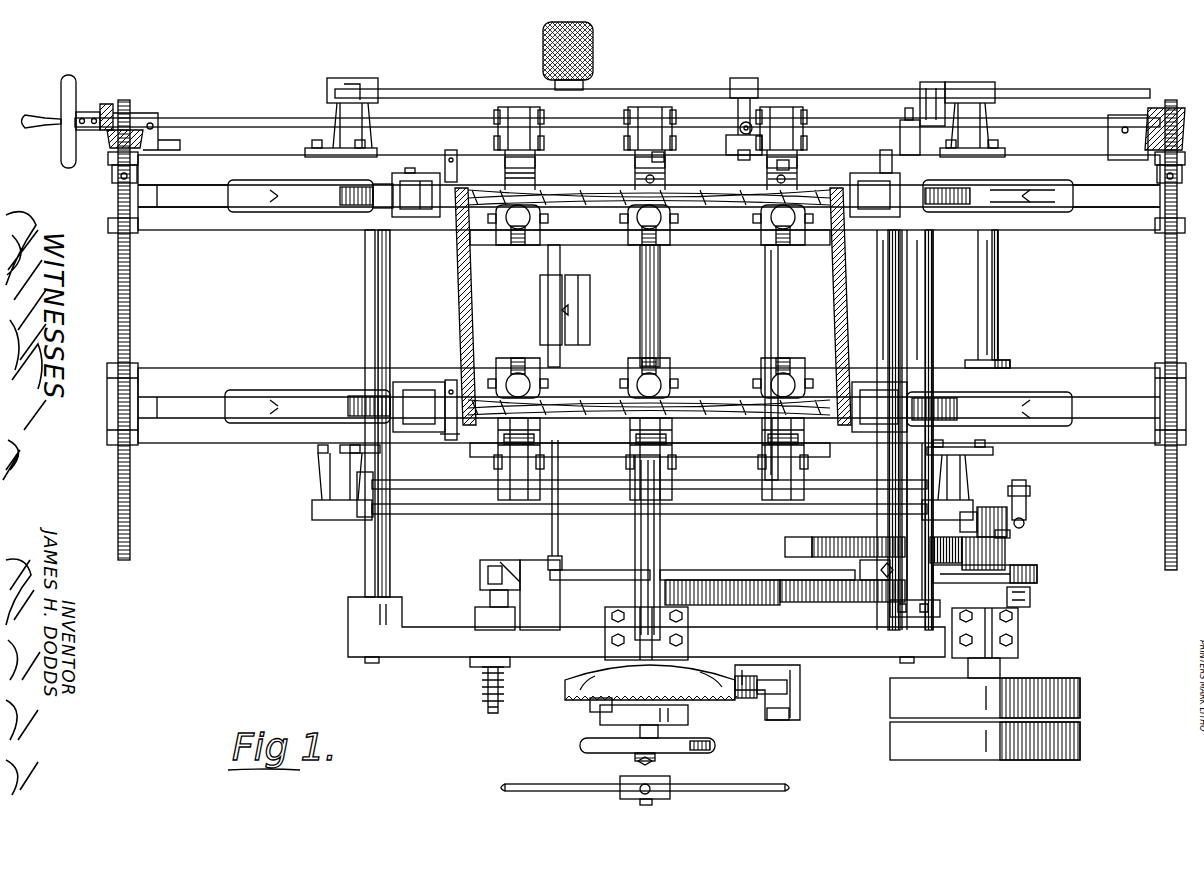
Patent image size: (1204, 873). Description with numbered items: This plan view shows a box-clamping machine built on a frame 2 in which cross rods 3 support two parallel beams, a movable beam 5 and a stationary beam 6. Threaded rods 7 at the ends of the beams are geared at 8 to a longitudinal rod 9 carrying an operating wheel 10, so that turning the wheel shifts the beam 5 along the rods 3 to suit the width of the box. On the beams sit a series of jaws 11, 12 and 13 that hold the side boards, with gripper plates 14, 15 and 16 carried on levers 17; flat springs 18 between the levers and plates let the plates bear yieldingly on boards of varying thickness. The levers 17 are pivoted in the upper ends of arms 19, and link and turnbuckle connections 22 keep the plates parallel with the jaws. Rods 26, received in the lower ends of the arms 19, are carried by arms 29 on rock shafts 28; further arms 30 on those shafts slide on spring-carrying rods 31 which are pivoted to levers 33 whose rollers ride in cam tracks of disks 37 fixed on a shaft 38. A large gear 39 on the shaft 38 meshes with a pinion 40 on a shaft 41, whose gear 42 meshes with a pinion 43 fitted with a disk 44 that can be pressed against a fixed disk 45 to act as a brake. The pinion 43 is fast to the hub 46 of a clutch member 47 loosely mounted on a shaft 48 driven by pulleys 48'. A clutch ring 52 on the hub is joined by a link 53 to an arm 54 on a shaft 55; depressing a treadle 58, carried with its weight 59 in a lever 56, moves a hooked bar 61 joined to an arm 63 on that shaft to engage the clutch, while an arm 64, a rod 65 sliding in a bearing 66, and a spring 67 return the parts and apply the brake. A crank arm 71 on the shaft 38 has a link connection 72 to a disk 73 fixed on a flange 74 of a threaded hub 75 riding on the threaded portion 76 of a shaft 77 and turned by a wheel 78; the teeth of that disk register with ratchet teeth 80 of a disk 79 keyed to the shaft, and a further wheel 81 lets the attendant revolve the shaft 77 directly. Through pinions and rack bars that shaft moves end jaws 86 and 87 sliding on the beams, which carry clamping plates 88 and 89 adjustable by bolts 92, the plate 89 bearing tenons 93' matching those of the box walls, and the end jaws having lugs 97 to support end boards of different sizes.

The frame 2 is at (348, 652).
The cross rods 3 is at (362, 552).
The movable beam 5 is at (248, 443).
The stationary beam 6 is at (291, 230).
The threaded rods 7 is at (130, 322).
The gear connection 8 is at (108, 138).
The longitudinal rod 9 is at (225, 122).
The operating wheel 10 is at (62, 92).
The jaw 11 is at (760, 230).
The jaw 12 is at (650, 232).
The jaw 13 is at (512, 232).
The gripper plate 14 is at (785, 185).
The gripper plate 15 is at (660, 185).
The gripper plate 16 is at (515, 188).
The levers 17 is at (782, 110).
The flat springs 18 is at (790, 180).
The arms 19 is at (668, 148).
The link and turnbuckle connections 22 is at (663, 105).
The rods 26 is at (880, 100).
The rock shafts 28 is at (930, 90).
The arms 29 is at (975, 108).
The arms 30 is at (748, 78).
The rods 31 is at (742, 128).
The levers 33 is at (870, 160).
The disks 37 is at (742, 135).
The shaft 38 is at (778, 302).
The large gear 39 is at (700, 600).
The pinion 40 is at (860, 598).
The shaft 41 is at (875, 520).
The gear 42 is at (810, 546).
The pinion 43 is at (1005, 548).
The disk 44 is at (1037, 572).
The disk 45 is at (1025, 590).
The hub 46 is at (1007, 520).
The clutch member 47 is at (1010, 462).
The shaft 48 is at (1008, 299).
The driving pulleys 48' is at (1010, 709).
The clutch ring 52 is at (1020, 490).
The link 53 is at (1028, 503).
The arm 54 is at (1008, 536).
The shaft 55 is at (590, 572).
The lever 56 is at (565, 235).
The treadle 58 is at (542, 42).
The weight 59 is at (590, 318).
The bar 61 is at (560, 318).
The arm 63 is at (562, 568).
The arm 64 is at (480, 558).
The rod 65 is at (490, 598).
The bearing 66 is at (480, 620).
The spring 67 is at (482, 695).
The crank arm 71 is at (795, 680).
The link connection 72 is at (760, 715).
The disk 73 is at (592, 707).
The flange 74 is at (600, 710).
The hub 75 is at (660, 735).
The threaded portion 76 is at (660, 760).
The shaft 77 is at (662, 540).
The operating wheel 78 is at (590, 748).
The disk 79 is at (568, 684).
The ratchet teeth 80 is at (625, 672).
The operating wheel 81 is at (550, 787).
The end jaw 86 is at (335, 212).
The end jaw 87 is at (990, 200).
The clamping plate 88 is at (430, 212).
The clamping plate 89 is at (850, 235).
The adjusting bolts 92 is at (935, 195).
The tenons 93' is at (462, 427).
The lug 97 is at (450, 235).